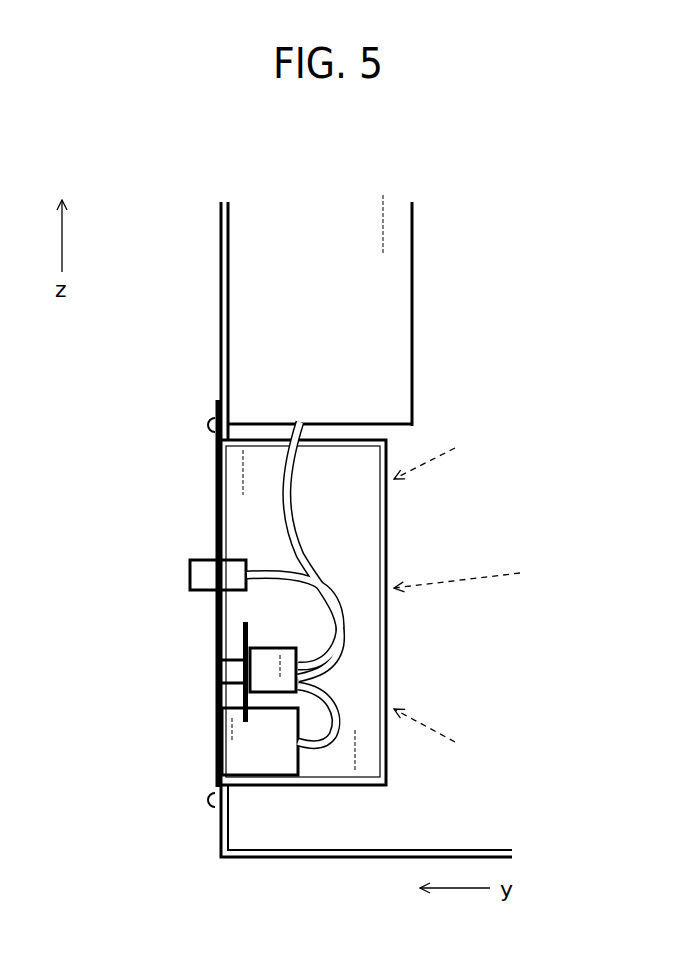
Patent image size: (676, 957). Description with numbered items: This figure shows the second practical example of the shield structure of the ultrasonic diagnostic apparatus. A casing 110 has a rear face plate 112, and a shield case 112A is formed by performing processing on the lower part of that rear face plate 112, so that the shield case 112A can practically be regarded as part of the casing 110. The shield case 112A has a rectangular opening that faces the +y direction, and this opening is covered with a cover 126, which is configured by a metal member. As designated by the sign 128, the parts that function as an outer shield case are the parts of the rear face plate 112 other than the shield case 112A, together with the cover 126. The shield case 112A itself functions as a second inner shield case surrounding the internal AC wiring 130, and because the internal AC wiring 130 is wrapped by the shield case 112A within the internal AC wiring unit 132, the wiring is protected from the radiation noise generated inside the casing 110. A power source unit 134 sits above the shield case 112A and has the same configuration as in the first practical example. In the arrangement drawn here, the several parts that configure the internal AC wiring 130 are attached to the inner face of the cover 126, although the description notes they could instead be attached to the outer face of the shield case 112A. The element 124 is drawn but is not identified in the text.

The casing 110 is at (208, 222).
The rear face plate 112 is at (221, 272).
The shield case 112A is at (388, 520).
The liquid supply device 124 is at (230, 540).
The cover 126 is at (215, 612).
The outer shield case parts 128 is at (243, 185).
The internal AC wiring 130 is at (385, 432).
The internal AC wiring unit 132 is at (417, 622).
The power source unit 134 is at (431, 280).